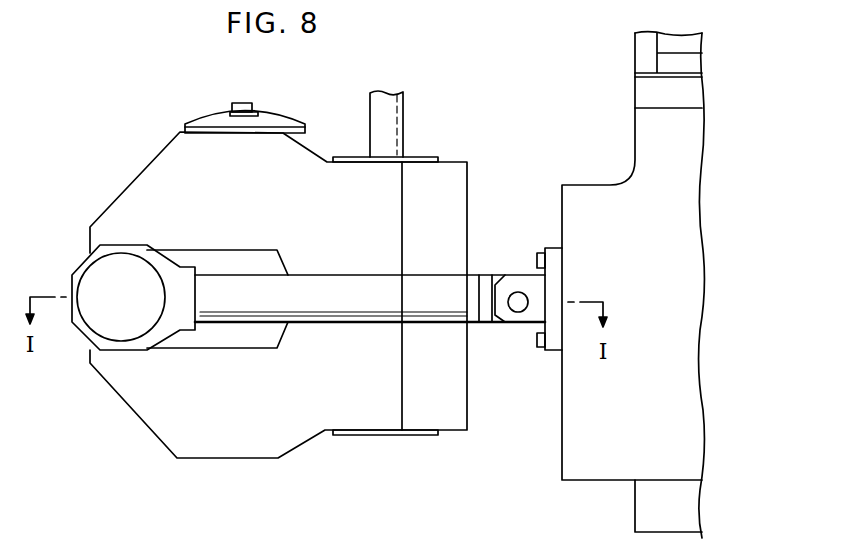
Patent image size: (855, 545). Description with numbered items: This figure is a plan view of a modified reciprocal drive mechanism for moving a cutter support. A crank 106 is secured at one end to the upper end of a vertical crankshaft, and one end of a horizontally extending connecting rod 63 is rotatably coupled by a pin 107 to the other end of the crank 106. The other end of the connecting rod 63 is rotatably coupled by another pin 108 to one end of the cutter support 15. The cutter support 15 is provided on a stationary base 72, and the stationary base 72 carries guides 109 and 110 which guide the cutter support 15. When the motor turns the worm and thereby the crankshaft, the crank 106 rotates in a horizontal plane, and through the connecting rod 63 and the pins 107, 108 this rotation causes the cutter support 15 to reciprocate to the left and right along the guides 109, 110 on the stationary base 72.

The cutter support 15 is at (572, 440).
The connecting rod 63 is at (352, 323).
The stationary base 72 is at (645, 47).
The crank 106 is at (258, 258).
The pin 107 is at (92, 278).
The pin 108 is at (517, 292).
The guide 109 is at (642, 93).
The guide 110 is at (643, 508).